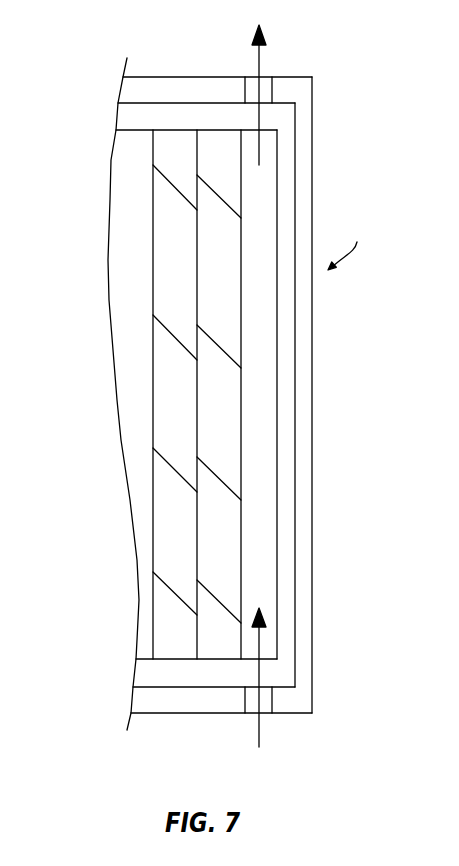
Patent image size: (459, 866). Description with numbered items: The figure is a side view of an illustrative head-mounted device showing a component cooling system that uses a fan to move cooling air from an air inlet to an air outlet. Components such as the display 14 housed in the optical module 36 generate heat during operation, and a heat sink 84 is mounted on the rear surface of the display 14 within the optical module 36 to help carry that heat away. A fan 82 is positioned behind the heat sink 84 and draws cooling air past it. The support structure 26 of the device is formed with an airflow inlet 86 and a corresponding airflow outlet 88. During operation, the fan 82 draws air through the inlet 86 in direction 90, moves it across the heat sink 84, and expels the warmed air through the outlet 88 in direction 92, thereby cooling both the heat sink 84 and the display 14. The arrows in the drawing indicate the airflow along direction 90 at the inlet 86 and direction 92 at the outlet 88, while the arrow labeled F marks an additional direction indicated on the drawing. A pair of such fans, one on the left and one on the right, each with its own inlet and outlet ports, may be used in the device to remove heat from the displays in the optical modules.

The display 14 is at (163, 253).
The support structure 26 is at (181, 713).
The optical module 36 is at (128, 128).
The fan 82 is at (277, 410).
The heat sink 84 is at (213, 398).
The inlet 86 is at (272, 700).
The outlet 88 is at (272, 88).
The direction 90 is at (260, 735).
The direction 92 is at (259, 48).
The force direction F is at (344, 245).